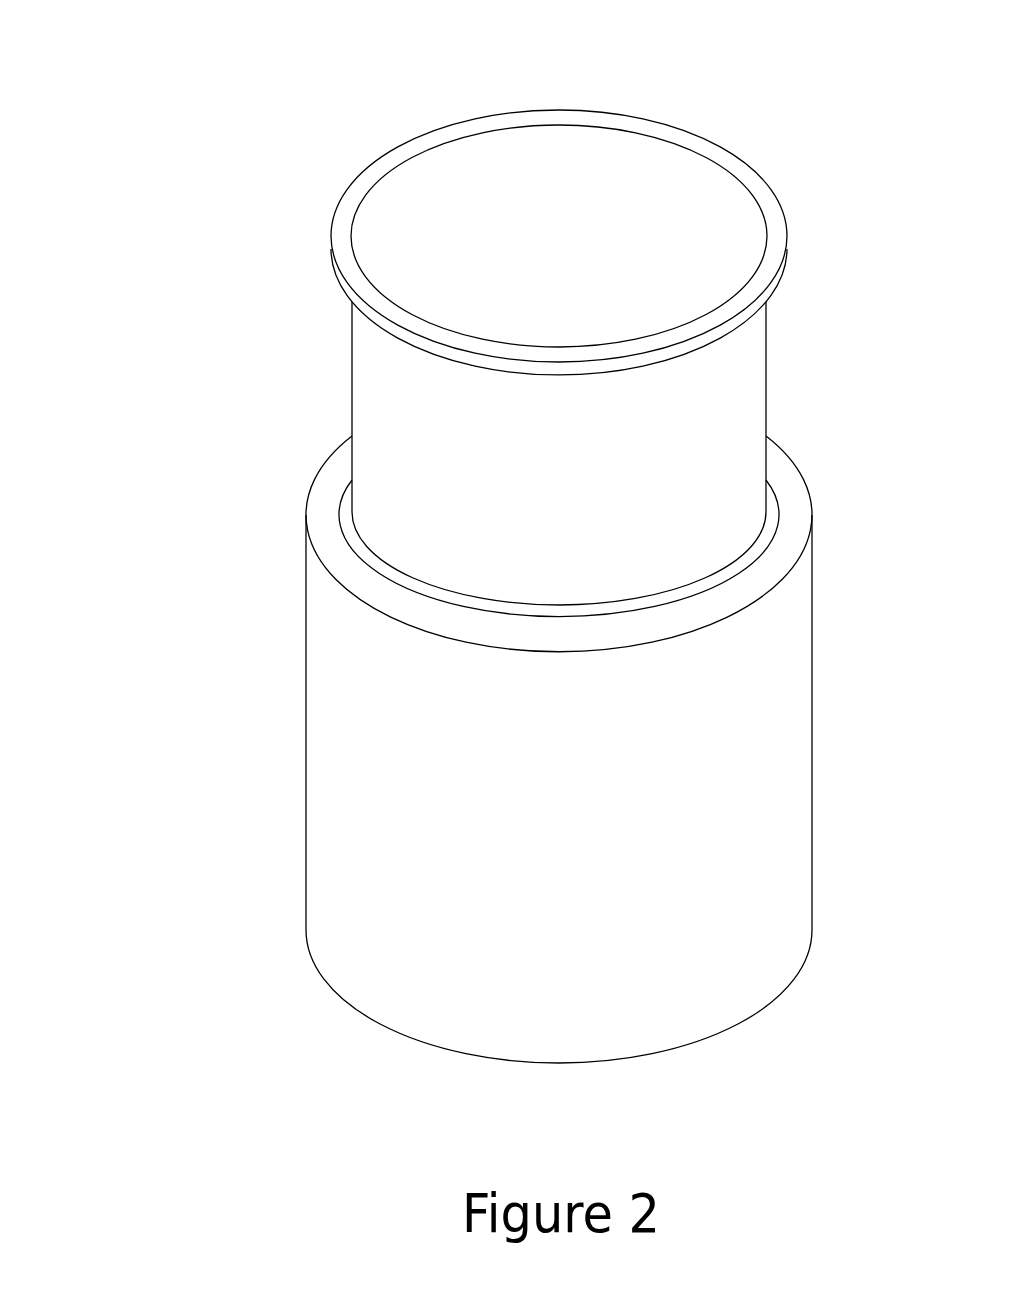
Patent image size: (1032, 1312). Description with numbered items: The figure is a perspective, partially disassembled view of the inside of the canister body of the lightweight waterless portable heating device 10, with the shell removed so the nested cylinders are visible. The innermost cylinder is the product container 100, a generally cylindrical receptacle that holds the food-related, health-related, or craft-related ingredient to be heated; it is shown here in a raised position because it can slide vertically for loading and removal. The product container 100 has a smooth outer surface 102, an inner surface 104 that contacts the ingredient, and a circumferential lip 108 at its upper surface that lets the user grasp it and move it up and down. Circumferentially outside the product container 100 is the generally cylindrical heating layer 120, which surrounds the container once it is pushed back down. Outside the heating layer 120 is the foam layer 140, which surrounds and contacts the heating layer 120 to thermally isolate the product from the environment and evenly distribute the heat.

The lightweight waterless portable heating device 10 is at (117, 62).
The product container 100 is at (352, 310).
The outer surface 102 is at (375, 395).
The inner surface 104 is at (657, 152).
The circumferential lip 108 is at (776, 278).
The heating layer 120 is at (345, 503).
The foam layer 140 is at (333, 672).